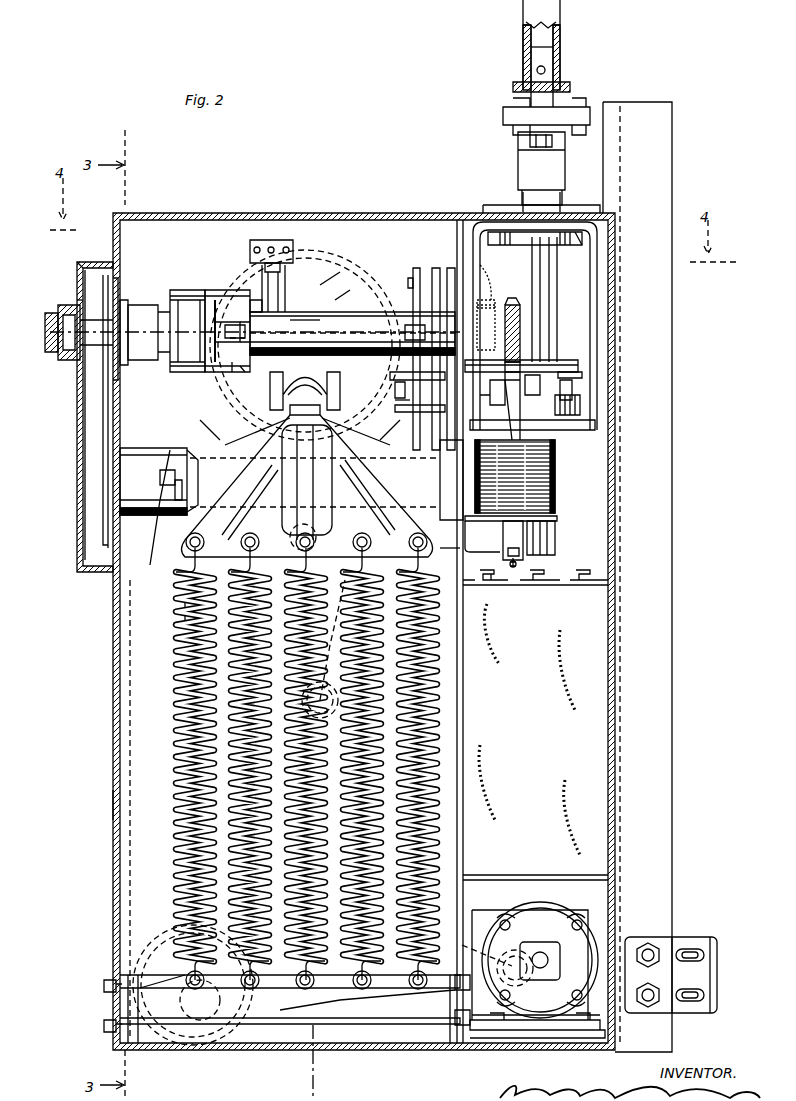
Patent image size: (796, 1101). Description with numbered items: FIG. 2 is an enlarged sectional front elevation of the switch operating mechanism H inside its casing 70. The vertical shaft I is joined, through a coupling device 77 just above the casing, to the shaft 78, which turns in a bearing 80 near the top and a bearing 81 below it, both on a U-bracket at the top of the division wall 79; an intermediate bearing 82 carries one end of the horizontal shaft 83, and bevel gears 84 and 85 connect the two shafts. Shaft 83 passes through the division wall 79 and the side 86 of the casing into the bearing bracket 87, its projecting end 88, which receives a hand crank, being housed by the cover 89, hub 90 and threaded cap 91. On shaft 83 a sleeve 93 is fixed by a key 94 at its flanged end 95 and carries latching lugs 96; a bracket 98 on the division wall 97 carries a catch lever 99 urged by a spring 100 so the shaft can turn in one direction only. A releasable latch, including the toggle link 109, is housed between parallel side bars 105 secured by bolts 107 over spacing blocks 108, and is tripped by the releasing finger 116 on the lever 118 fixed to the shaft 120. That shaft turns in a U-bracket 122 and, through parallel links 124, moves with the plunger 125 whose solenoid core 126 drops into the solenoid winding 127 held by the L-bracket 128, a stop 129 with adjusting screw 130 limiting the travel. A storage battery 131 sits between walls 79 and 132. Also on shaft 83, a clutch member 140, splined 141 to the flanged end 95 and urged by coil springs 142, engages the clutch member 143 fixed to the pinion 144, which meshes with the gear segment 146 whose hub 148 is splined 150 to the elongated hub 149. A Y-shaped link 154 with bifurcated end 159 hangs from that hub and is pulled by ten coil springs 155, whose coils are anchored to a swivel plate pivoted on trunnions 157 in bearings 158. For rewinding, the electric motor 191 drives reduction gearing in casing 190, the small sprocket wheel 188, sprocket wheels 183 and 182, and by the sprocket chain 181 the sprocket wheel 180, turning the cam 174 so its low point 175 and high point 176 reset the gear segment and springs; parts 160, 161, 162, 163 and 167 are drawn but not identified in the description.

The casing 70 is at (335, 212).
The division wall 79 is at (458, 232).
The storage battery 131 is at (590, 748).
The wall 132 is at (612, 655).
The shaft I is at (515, 20).
The coupling device 77 is at (515, 140).
The shaft 78 is at (556, 288).
The bearing 80 is at (583, 245).
The bearing 82 is at (490, 300).
The bevel gear 85 is at (522, 293).
The bevel gear 84 is at (570, 355).
The U-bracket 122 is at (532, 350).
The shaft 120 is at (575, 372).
The parallel links 124 is at (545, 385).
The bearing 81 is at (575, 415).
The plunger 125 is at (557, 470).
The solenoid winding 127 is at (557, 508).
The L-bracket 128 is at (555, 525).
The solenoid core 126 is at (496, 540).
The stop 129 is at (520, 556).
The screw 130 is at (517, 564).
The casing 190 is at (520, 900).
The small sprocket wheel 188 is at (545, 915).
The motor shaft 163 is at (515, 950).
The electric motor 191 is at (590, 938).
The side of the casing 86 is at (113, 262).
The bearing bracket 87 is at (108, 280).
The cover 89 is at (70, 262).
The hub 90 is at (77, 296).
The end of shaft 88 is at (62, 310).
The cap 91 is at (42, 328).
The gear segment 146 is at (130, 365).
The pinion 144 is at (145, 300).
The clutch member 143 is at (182, 290).
The clutch member 140 is at (195, 300).
The coil springs 142 is at (222, 290).
The spline 141 is at (240, 372).
The pin 161 is at (250, 370).
The latching lugs 96 is at (255, 300).
The key 94 is at (236, 323).
The flanged end 95 is at (255, 334).
The division wall 97 is at (365, 320).
The cam 174 is at (345, 290).
The sprocket wheel 180 is at (335, 275).
The shaft 83 is at (330, 340).
The sleeve 93 is at (305, 320).
The link 109 is at (405, 333).
The spring 100 is at (290, 262).
The bracket 98 is at (262, 266).
The catch lever 99 is at (250, 295).
The bolts 107 is at (413, 275).
The parallel side bars 105 is at (432, 275).
The spacing blocks 108 is at (447, 272).
The yoke 162 is at (320, 375).
The lever 118 is at (390, 376).
The releasing finger 116 is at (395, 390).
The coil springs 155 is at (392, 402).
The bar 167 is at (395, 410).
The hub 148 is at (165, 448).
The elongated hub 149 is at (170, 440).
The splining 150 is at (175, 490).
The link 154 is at (180, 600).
The low point 175 is at (305, 425).
The high point 176 is at (306, 540).
The bar 160 is at (451, 548).
The coil springs coils is at (306, 764).
The sprocket chain 181 is at (170, 768).
The switch operating mechanism H is at (100, 800).
The trunnions 157 is at (330, 1030).
The bearings 158 is at (100, 1012).
The bifurcated end 159 is at (110, 984).
The smaller sprocket wheel 182 is at (185, 1045).
The sprocket wheel 183 is at (210, 1020).